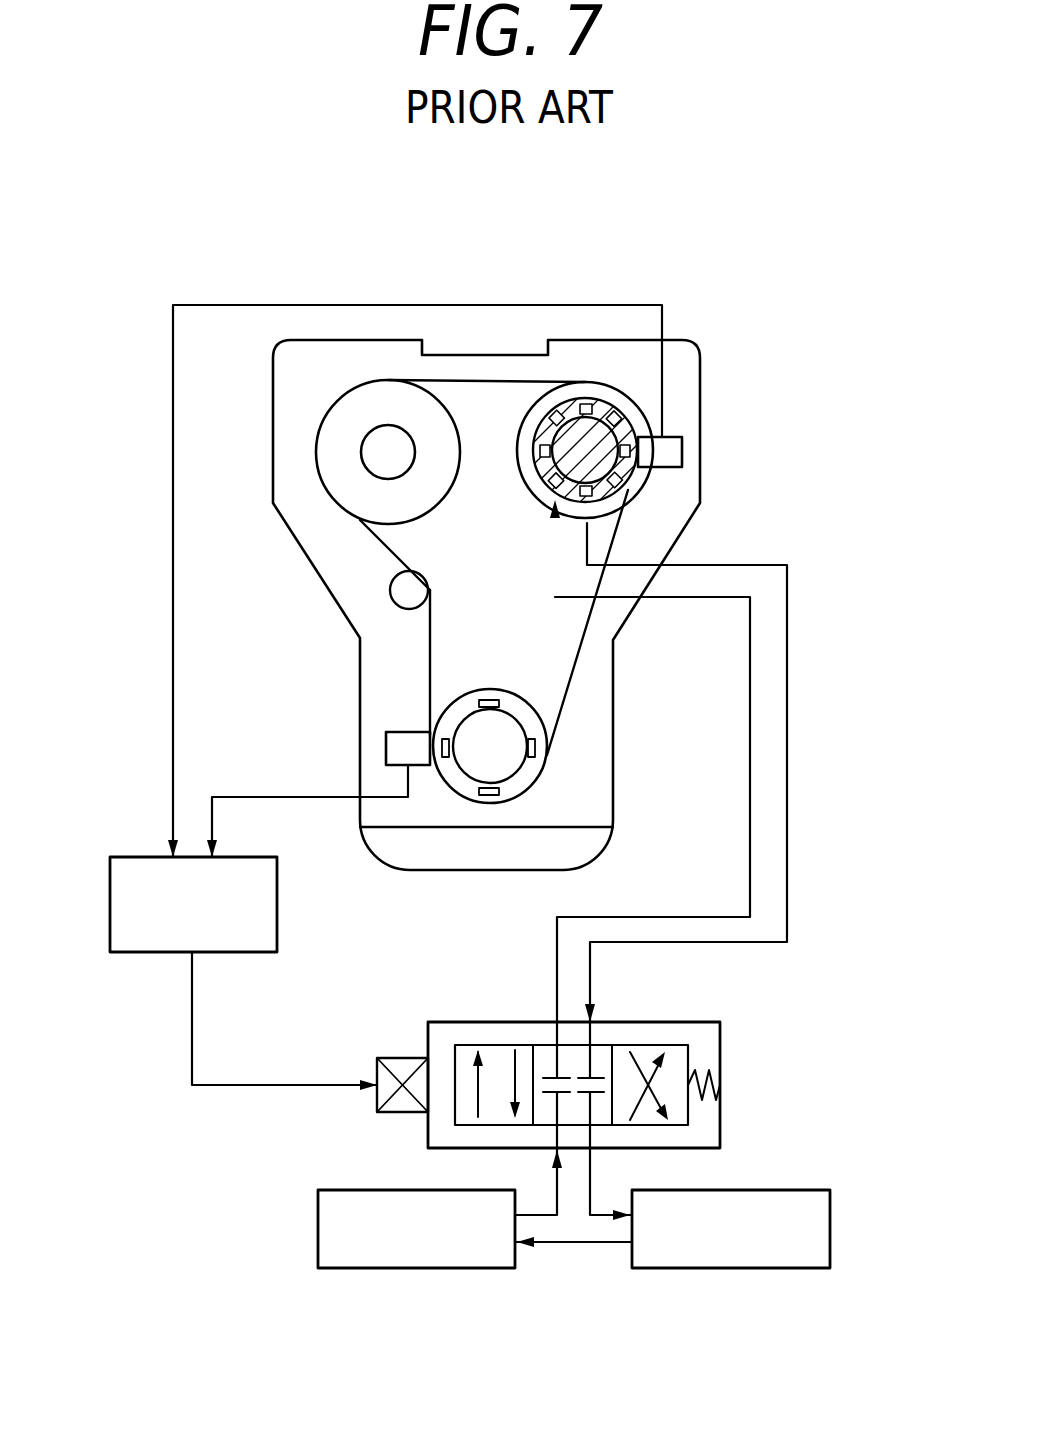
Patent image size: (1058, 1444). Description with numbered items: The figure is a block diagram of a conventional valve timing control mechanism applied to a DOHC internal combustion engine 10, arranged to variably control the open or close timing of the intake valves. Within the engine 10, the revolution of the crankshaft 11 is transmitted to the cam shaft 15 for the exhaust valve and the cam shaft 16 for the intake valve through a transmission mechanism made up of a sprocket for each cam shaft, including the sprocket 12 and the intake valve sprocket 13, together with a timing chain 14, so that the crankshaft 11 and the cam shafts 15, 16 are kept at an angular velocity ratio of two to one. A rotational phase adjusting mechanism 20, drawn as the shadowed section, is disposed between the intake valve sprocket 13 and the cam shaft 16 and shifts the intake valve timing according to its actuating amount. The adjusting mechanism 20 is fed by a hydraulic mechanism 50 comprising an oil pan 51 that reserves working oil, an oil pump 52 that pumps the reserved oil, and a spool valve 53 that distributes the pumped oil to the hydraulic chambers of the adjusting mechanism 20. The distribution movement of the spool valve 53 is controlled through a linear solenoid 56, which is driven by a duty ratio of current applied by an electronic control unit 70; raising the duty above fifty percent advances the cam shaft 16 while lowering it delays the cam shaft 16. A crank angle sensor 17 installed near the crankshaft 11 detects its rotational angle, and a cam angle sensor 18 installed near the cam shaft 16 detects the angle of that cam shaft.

The internal combustion engine 10 is at (726, 372).
The crankshaft 11 is at (517, 762).
The intake camshaft sprocket 12 is at (365, 393).
The intake valve sprocket 13 is at (612, 390).
The timing chain 14 is at (578, 673).
The cam shaft 15 is at (372, 458).
The cam shaft 16 is at (577, 418).
The crank angle sensor 17 is at (392, 750).
The cam angle sensor 18 is at (680, 450).
The rotational phase adjusting mechanism 20 is at (657, 490).
The hydraulic mechanism 50 is at (730, 1077).
The oil pan 51 is at (810, 1268).
The oil pump 52 is at (478, 1268).
The spool valve 53 is at (628, 1022).
The linear solenoid 56 is at (402, 1058).
The electronic control unit 70 is at (160, 953).